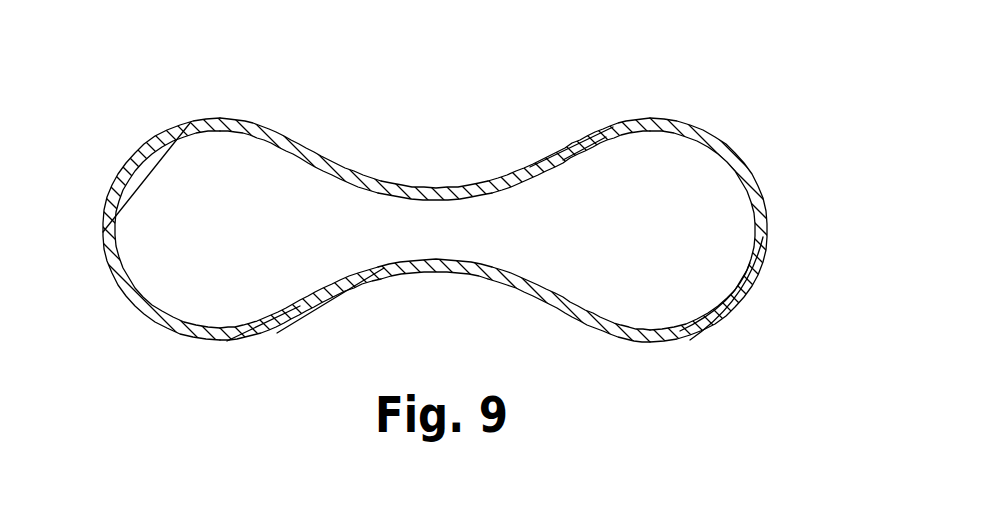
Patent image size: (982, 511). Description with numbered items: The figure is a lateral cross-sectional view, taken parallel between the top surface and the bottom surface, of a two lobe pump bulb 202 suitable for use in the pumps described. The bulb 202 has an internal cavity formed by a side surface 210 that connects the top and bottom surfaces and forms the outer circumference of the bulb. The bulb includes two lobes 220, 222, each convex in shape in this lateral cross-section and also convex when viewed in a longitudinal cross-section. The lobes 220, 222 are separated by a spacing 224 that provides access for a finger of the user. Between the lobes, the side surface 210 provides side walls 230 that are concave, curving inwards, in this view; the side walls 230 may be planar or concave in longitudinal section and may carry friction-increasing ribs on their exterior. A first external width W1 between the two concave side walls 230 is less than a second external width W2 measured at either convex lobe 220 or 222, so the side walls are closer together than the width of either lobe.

The two lobe bulb 202 is at (491, 206).
The side surface 210 is at (491, 206).
The lobe 220 is at (724, 336).
The lobe 222 is at (145, 328).
The spacing 224 is at (478, 92).
The side walls 230 is at (487, 190).
The first external width W1 is at (438, 313).
The second external width W2 is at (226, 398).